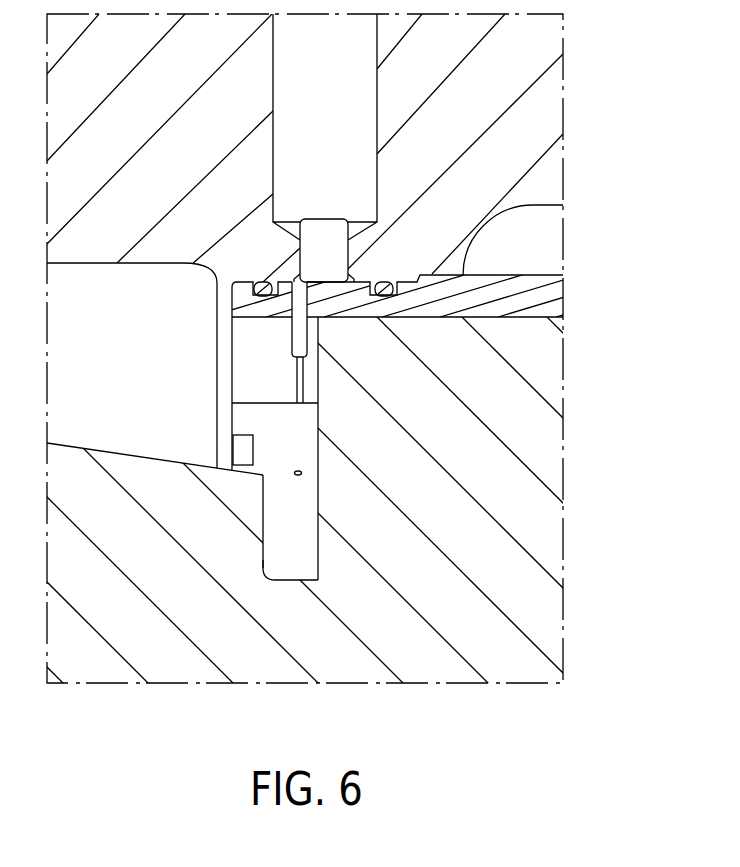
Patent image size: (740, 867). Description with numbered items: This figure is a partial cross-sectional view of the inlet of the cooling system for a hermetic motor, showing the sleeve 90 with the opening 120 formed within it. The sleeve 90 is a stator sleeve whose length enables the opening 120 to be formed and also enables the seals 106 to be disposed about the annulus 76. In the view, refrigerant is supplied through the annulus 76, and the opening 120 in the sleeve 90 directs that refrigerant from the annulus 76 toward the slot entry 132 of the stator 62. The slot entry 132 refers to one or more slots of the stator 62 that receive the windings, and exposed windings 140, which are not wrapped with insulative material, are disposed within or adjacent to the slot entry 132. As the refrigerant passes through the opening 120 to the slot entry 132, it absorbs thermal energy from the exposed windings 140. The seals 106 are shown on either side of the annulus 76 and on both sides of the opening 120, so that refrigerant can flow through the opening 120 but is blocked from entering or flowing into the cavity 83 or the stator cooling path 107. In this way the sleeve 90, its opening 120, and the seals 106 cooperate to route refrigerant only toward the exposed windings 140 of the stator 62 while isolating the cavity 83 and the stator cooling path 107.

The stator 62 is at (548, 450).
The annulus 76 is at (324, 233).
The cavity 83 is at (127, 334).
The sleeve 90 is at (508, 305).
The seals 106 is at (258, 282).
The stator cooling path 107 is at (527, 248).
The opening 120 is at (300, 383).
The slot entry 132 is at (303, 553).
The exposed windings 140 is at (270, 583).